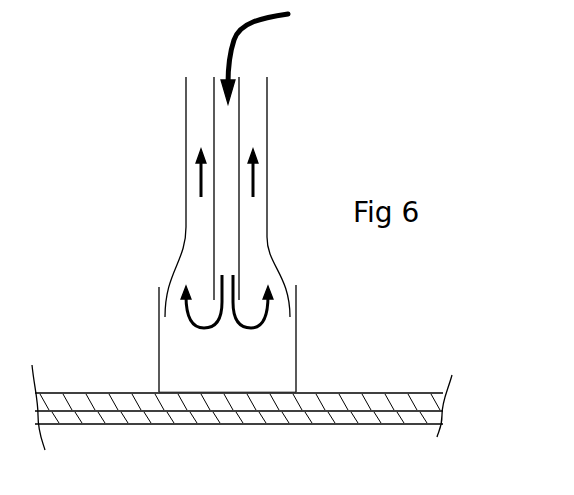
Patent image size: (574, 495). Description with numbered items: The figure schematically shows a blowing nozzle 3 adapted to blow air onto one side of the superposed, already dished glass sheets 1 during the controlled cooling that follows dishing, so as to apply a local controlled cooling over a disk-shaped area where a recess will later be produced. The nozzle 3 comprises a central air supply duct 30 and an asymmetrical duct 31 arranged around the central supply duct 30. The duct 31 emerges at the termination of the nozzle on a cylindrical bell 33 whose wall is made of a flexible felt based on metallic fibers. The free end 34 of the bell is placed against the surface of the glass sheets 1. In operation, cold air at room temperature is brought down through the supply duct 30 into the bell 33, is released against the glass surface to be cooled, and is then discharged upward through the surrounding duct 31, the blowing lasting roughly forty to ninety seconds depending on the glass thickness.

The substrate surface 1 is at (364, 372).
The nozzle 3 is at (120, 241).
The central air supply duct 30 is at (225, 125).
The asymmetrical duct 31 is at (263, 178).
The cylindrical bell 33 is at (158, 326).
The free end of the bell 34 is at (160, 388).